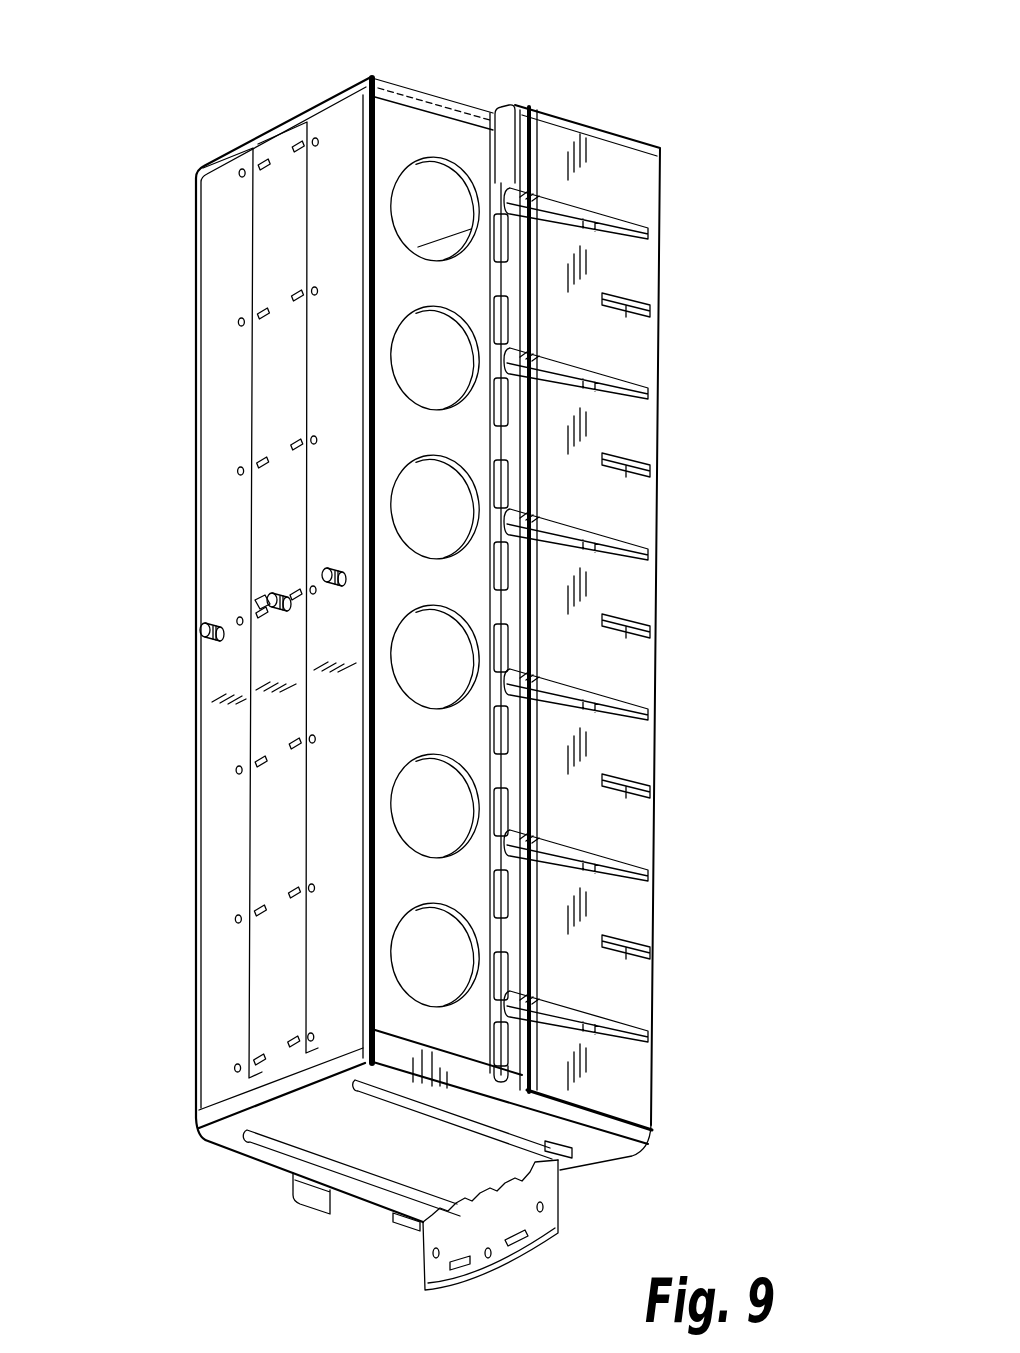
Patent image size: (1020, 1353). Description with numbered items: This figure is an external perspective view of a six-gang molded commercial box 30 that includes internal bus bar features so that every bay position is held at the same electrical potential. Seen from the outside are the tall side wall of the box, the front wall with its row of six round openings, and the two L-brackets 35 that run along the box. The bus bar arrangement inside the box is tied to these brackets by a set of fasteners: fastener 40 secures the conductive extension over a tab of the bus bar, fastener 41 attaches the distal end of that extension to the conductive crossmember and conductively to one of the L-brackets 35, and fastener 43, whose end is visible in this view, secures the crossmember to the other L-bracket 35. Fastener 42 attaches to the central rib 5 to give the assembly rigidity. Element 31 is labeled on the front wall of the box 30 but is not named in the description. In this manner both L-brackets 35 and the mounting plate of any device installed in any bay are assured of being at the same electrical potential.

The 6-gang molded commercial box 30 is at (700, 117).
The central rib 5 is at (275, 197).
The L-bracket 35 is at (345, 173).
The front wall 31 is at (439, 107).
The fastener 40 is at (533, 108).
The fastener 41 is at (322, 572).
The fastener 42 is at (268, 600).
The fastener 43 is at (207, 622).